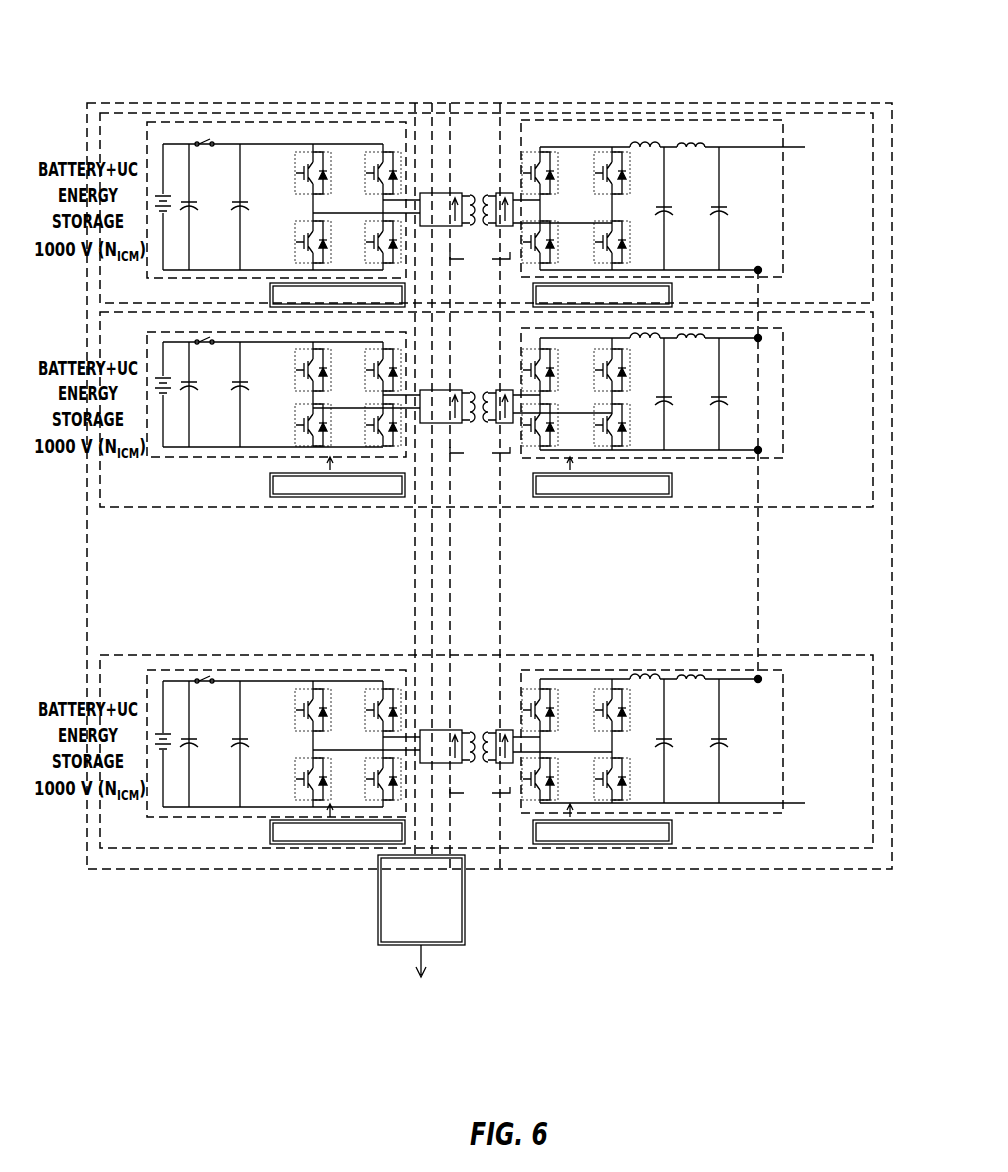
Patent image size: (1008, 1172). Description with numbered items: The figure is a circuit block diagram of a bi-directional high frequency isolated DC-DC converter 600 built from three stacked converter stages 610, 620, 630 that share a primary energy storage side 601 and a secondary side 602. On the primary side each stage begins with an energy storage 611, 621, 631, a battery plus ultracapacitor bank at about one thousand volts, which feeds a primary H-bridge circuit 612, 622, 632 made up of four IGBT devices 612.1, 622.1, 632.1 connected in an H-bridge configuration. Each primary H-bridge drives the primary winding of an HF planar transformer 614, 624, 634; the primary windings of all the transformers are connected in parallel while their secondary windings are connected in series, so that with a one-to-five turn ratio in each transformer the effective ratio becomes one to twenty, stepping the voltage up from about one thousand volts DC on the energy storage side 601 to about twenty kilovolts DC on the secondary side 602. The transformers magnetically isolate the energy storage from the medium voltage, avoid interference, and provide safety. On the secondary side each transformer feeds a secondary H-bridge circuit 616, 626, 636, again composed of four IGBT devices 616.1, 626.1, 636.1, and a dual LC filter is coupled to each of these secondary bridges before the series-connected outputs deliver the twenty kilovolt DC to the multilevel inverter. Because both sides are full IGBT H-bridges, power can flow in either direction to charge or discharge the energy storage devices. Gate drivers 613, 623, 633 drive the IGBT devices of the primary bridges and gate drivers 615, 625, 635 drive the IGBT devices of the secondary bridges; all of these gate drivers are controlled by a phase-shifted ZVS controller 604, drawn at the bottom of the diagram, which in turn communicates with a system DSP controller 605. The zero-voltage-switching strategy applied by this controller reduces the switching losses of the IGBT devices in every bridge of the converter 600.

The HF DC-DC converter 600 is at (152, 993).
The primary energy storage side 601 is at (143, 870).
The secondary side 602 is at (820, 869).
The phase-shifted ZVS controller 604 is at (467, 925).
The system DSP controller 605 is at (367, 1008).
The first converter module 610 is at (100, 138).
The energy storage 611 is at (170, 210).
The H-bridge circuit 612 is at (172, 132).
The IGBT devices 612.1 is at (386, 240).
The gate drivers 613 is at (278, 283).
The HF planar transformer 614 is at (490, 148).
The gate drivers 615 is at (585, 283).
The H-bridge circuit 616 is at (733, 125).
The IGBT devices 616.1 is at (615, 240).
The second converter module 620 is at (100, 335).
The energy storage 621 is at (170, 395).
The H-bridge circuit 622 is at (222, 458).
The IGBT devices 622.1 is at (385, 428).
The gate drivers 623 is at (292, 498).
The HF planar transformer 624 is at (478, 452).
The gate drivers 625 is at (610, 498).
The H-bridge circuit 626 is at (700, 473).
The IGBT devices 626.1 is at (615, 428).
The third converter module 630 is at (100, 677).
The energy storage 631 is at (170, 740).
The H-bridge circuit 632 is at (257, 818).
The IGBT devices 632.1 is at (385, 782).
The gate drivers 633 is at (292, 845).
The HF planar transformer 634 is at (478, 790).
The gate drivers 635 is at (610, 843).
The H-bridge circuit 636 is at (700, 815).
The IGBT devices 636.1 is at (615, 782).